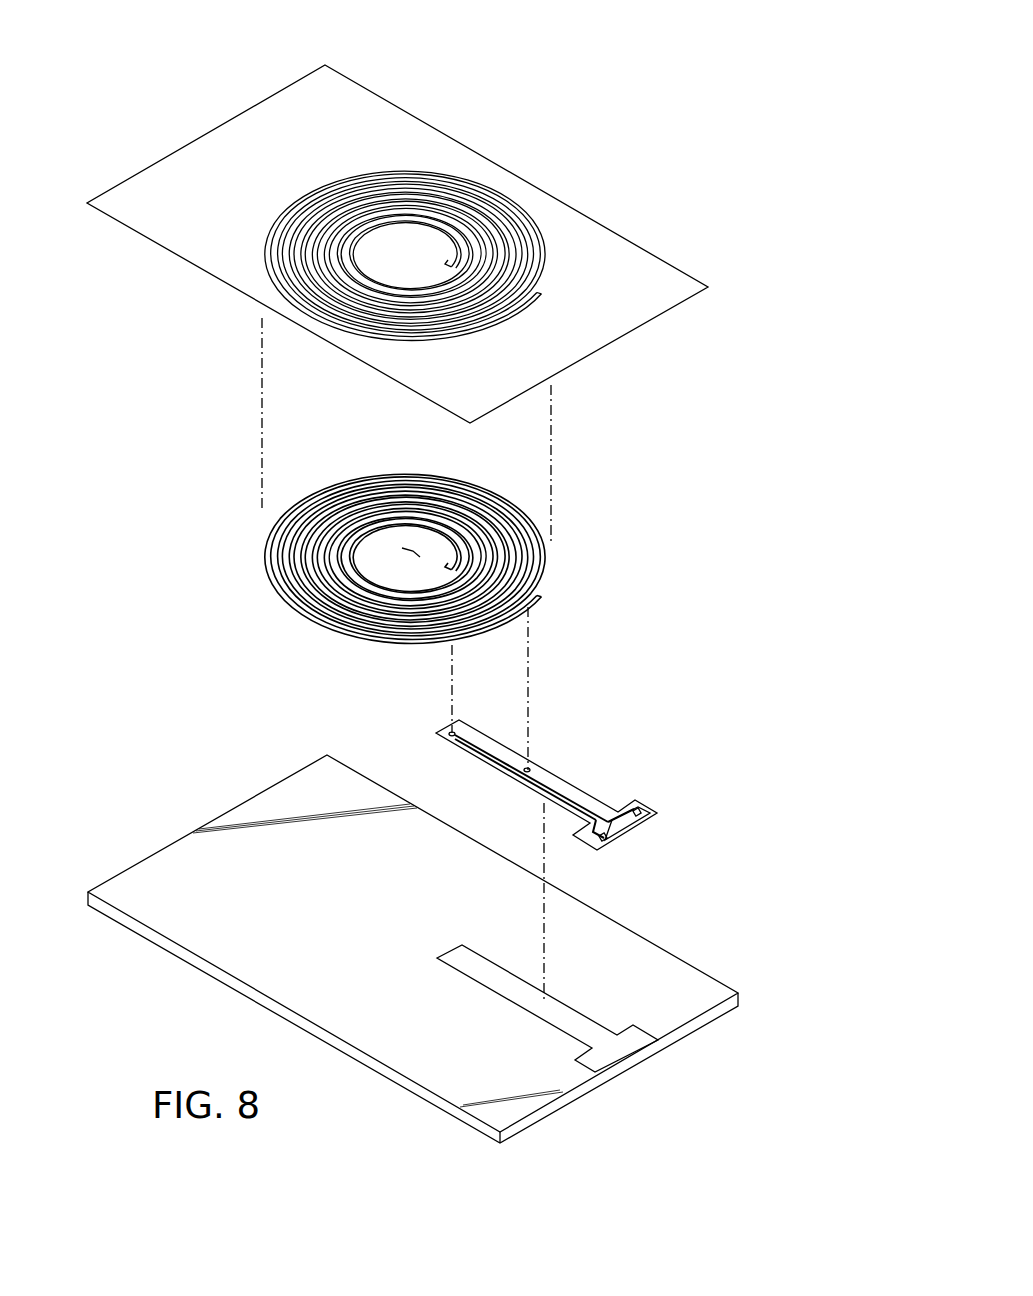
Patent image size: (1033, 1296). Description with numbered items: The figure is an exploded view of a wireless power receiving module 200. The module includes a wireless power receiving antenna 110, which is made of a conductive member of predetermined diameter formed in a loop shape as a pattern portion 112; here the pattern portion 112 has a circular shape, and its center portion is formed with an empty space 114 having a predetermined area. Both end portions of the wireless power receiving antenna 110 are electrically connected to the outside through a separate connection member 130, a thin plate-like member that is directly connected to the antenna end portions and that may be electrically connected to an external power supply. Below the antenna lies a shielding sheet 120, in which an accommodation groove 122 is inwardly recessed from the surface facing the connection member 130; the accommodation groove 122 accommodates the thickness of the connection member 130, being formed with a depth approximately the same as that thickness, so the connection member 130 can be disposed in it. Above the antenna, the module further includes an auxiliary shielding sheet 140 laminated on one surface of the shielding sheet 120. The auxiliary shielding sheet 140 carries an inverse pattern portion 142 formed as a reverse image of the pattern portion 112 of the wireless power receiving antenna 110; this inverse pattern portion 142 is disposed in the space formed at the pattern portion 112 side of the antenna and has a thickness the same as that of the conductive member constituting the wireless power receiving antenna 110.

The wireless power receiving module 200 is at (425, 38).
The auxiliary shielding sheet 140 is at (648, 252).
The inverse pattern portion 142 is at (518, 200).
The wireless power receiving antenna 110 is at (473, 532).
The pattern portion 112 is at (547, 573).
The empty space 114 is at (415, 549).
The connection member 130 is at (645, 800).
The shielding sheet 120 is at (436, 949).
The accommodation groove 122 is at (577, 1010).